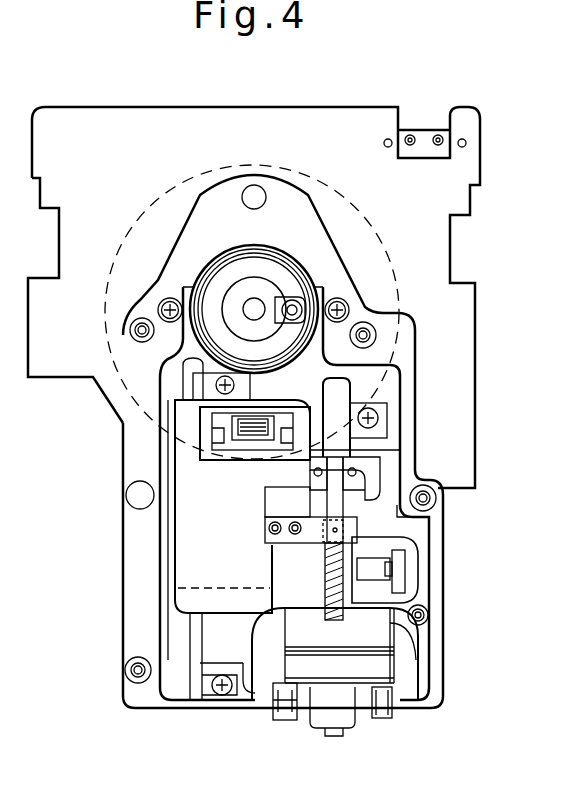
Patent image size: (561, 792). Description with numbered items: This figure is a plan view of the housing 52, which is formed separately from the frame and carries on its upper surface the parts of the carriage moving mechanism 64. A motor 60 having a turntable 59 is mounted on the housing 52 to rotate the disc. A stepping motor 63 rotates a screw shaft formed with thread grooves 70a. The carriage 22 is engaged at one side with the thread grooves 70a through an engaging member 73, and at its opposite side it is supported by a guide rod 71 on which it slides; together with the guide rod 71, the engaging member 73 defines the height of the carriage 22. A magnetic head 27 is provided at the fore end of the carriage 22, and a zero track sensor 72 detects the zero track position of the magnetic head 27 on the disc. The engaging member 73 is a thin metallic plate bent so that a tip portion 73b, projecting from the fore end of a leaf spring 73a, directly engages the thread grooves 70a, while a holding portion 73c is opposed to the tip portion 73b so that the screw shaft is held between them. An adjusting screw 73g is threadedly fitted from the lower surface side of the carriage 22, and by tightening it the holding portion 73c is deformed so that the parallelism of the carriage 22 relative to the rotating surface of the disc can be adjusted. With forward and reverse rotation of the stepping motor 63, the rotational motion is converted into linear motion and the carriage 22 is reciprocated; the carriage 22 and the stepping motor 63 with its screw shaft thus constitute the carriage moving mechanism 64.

The carriage 22 is at (180, 537).
The magnetic head 27 is at (240, 427).
The housing 52 is at (137, 460).
The turntable 59 is at (277, 272).
The motor 60 is at (110, 320).
The stepping motor 63 is at (268, 708).
The carriage moving mechanism 64 is at (397, 642).
The thread grooves 70a is at (331, 575).
The guide rod 71 is at (190, 633).
The "0" track sensor 72 is at (368, 570).
The engaging member 73 is at (377, 467).
The leaf spring 73a is at (357, 518).
The tip portion 73b is at (323, 532).
The holding portion 73c is at (283, 517).
The adjusting screw 73g is at (287, 535).